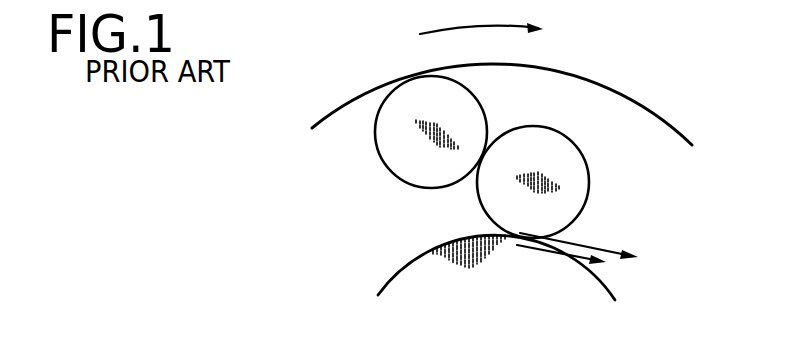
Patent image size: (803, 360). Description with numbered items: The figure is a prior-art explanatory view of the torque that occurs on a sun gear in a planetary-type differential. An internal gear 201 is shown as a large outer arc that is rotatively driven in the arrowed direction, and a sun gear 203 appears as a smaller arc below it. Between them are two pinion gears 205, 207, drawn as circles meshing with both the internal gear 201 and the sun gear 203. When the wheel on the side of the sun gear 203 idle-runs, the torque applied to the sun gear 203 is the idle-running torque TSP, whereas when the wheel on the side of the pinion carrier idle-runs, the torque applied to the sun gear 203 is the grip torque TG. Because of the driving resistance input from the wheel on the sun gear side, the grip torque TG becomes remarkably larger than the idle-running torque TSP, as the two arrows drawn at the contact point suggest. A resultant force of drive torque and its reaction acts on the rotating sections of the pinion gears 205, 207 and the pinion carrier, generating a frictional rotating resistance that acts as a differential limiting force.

The internal gear 201 is at (634, 102).
The sun gear 203 is at (428, 253).
The pinion gear 205 is at (377, 150).
The pinion gear 207 is at (588, 169).
The grip torque TG is at (598, 248).
The idle-running torque TSP is at (572, 262).